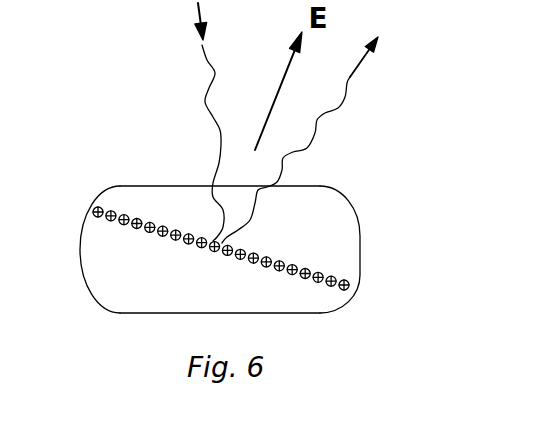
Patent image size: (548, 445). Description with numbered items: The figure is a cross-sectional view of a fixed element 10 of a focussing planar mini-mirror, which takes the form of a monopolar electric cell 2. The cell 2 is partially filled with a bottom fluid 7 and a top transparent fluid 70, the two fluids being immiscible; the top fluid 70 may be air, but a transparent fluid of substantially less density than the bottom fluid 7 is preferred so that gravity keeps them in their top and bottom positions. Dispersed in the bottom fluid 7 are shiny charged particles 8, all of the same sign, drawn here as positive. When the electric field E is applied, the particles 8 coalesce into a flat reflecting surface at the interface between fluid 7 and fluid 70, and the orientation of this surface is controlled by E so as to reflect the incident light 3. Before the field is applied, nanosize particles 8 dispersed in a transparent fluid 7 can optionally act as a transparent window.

The monopolar electric cell 2 is at (297, 238).
The light 3 is at (178, 143).
The bottom fluid 7 is at (166, 311).
The shiny charged particles 8 is at (168, 229).
The fixed element 10 is at (72, 305).
The top transparent fluid 70 is at (363, 249).